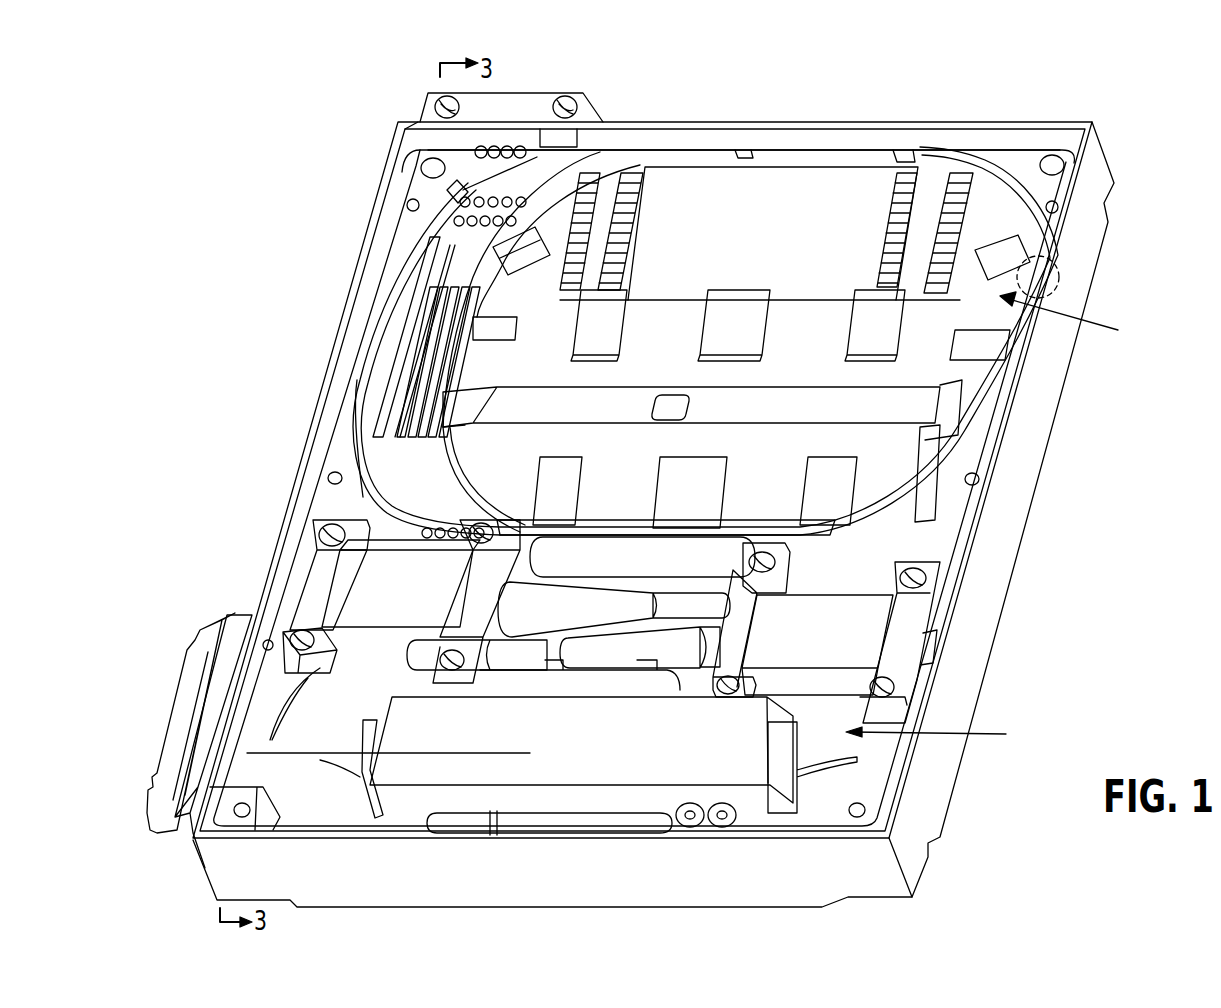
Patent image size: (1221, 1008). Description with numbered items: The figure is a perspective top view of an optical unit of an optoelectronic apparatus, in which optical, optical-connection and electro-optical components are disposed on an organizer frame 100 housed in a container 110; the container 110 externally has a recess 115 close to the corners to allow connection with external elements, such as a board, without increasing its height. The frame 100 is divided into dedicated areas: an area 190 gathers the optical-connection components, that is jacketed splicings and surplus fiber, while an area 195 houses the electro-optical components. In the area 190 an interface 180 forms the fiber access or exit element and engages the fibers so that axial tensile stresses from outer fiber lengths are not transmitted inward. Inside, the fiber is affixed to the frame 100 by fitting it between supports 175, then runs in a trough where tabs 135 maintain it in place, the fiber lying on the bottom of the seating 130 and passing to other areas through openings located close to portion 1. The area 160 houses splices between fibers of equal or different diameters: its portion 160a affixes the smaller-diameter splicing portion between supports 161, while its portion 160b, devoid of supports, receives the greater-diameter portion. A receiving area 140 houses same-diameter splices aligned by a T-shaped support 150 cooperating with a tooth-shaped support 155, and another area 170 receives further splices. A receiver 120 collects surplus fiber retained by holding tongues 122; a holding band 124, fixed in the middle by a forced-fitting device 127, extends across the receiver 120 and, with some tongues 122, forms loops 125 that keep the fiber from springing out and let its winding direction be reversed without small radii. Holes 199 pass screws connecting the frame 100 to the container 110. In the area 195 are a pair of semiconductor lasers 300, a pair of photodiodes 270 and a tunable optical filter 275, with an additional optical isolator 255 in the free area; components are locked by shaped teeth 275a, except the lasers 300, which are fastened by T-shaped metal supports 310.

The portion 1 is at (1060, 283).
The organizer frame 100 is at (1018, 160).
The container 110 is at (1052, 360).
The recess 115 is at (1113, 207).
The receiver 120 is at (679, 366).
The holding tongues 122 is at (467, 397).
The holding band 124 is at (812, 420).
The loops 125 is at (470, 430).
The forced-fitting device 127 is at (657, 403).
The seating 130 is at (833, 153).
The tabs 135 is at (743, 150).
The receiving area 140 is at (774, 257).
The T-shaped support 150 is at (897, 153).
The tooth-shaped support 155 is at (963, 167).
The area 160 is at (427, 290).
The portion 160a is at (440, 333).
The portion 160b is at (457, 270).
The supports 161 is at (347, 423).
The area 170 is at (393, 343).
The supports 175 is at (463, 173).
The interface 180 is at (517, 100).
The area 190 is at (1080, 320).
The area 195 is at (948, 734).
The holes 199 is at (418, 122).
The additional optical isolator 255 is at (563, 822).
The photodiodes 270 is at (659, 571).
The tunable optical filter 275 is at (590, 754).
The shaped teeth 275a is at (820, 776).
The semiconductor lasers 300 is at (417, 597).
The T-shaped metal supports 310 is at (911, 615).